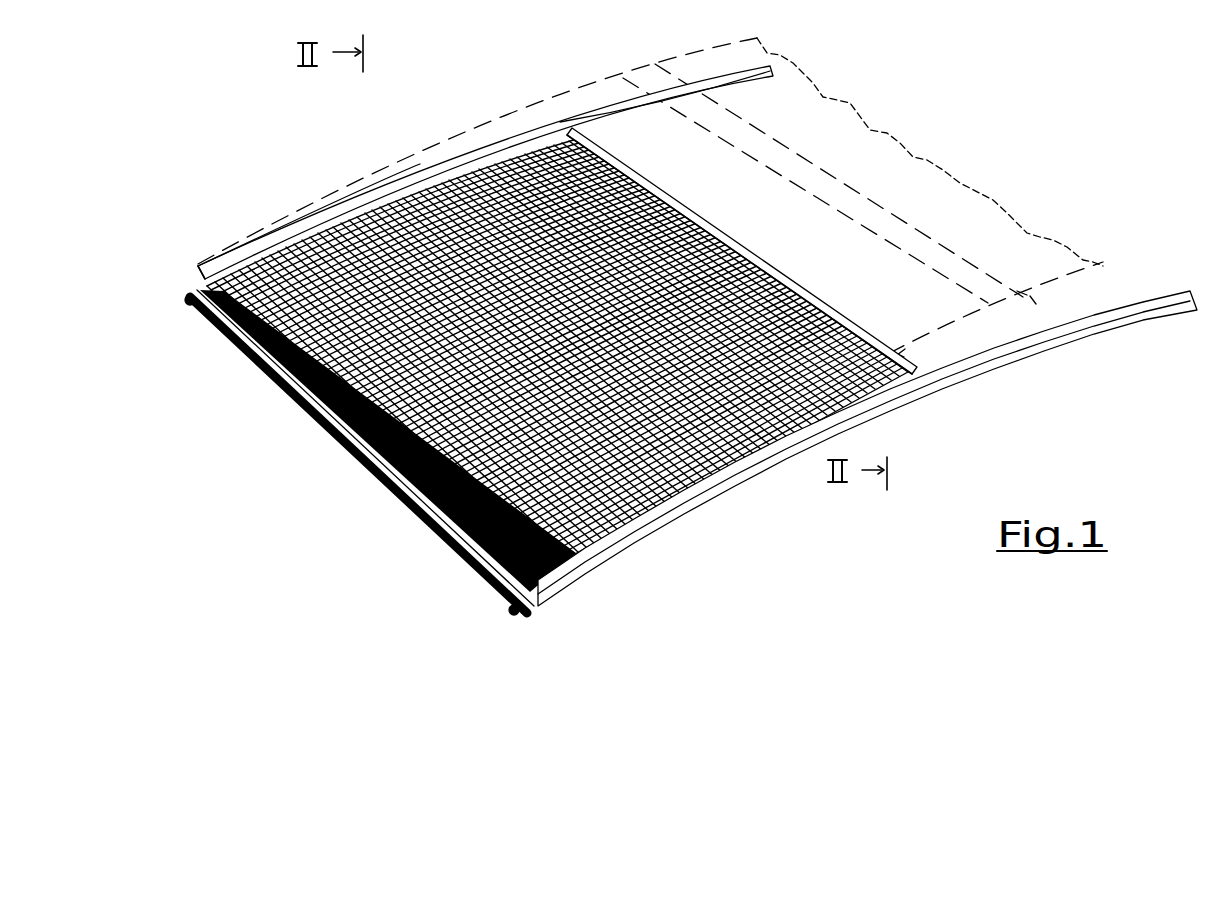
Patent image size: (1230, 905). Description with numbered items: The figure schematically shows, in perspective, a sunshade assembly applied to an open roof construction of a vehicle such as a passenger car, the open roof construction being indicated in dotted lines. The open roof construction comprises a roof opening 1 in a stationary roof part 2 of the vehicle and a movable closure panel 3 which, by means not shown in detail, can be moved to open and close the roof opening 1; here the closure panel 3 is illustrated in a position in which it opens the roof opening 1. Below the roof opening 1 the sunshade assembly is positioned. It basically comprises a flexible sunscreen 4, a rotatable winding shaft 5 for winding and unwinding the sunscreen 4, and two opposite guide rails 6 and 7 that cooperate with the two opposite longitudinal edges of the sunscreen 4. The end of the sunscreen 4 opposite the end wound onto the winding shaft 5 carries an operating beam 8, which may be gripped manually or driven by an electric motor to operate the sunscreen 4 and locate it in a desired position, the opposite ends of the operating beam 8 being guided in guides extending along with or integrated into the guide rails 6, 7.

The roof opening 1 is at (242, 233).
The stationary roof part 2 is at (305, 173).
The movable closure panel 3 is at (851, 121).
The flexible sunscreen 4 is at (635, 178).
The rotatable winding shaft 5 is at (393, 505).
The guide rail 6 is at (1060, 329).
The guide rail 7 is at (572, 103).
The operating beam 8 is at (742, 250).